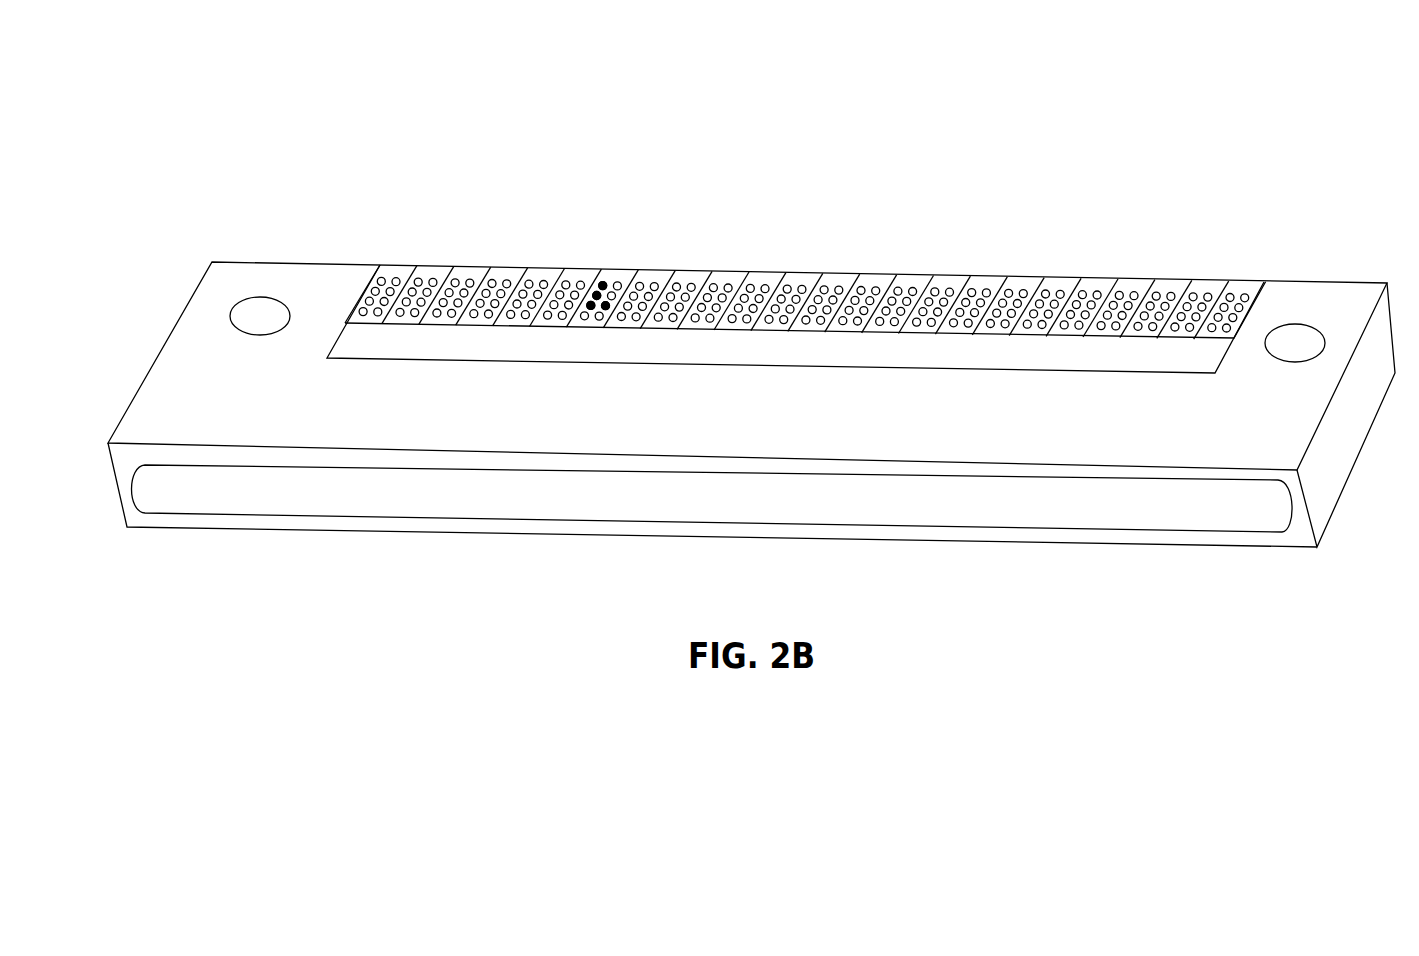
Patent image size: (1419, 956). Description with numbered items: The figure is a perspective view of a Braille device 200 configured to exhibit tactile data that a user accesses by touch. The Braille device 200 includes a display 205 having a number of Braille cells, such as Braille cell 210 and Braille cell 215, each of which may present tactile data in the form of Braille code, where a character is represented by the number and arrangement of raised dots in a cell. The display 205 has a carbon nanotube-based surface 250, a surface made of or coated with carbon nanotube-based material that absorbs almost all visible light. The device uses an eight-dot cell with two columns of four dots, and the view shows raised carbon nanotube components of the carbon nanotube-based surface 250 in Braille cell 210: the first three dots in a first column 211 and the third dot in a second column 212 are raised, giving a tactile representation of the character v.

The Braille device 200 is at (1048, 119).
The display 205 is at (480, 348).
The carbon nanotube-based surface 250 is at (360, 289).
The Braille cell 215 is at (915, 275).
The Braille cell 210 is at (614, 270).
The first column 211 is at (600, 270).
The second column 212 is at (619, 270).